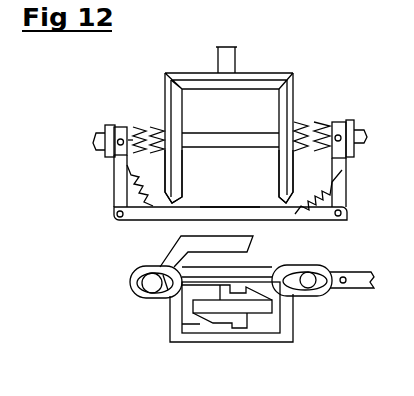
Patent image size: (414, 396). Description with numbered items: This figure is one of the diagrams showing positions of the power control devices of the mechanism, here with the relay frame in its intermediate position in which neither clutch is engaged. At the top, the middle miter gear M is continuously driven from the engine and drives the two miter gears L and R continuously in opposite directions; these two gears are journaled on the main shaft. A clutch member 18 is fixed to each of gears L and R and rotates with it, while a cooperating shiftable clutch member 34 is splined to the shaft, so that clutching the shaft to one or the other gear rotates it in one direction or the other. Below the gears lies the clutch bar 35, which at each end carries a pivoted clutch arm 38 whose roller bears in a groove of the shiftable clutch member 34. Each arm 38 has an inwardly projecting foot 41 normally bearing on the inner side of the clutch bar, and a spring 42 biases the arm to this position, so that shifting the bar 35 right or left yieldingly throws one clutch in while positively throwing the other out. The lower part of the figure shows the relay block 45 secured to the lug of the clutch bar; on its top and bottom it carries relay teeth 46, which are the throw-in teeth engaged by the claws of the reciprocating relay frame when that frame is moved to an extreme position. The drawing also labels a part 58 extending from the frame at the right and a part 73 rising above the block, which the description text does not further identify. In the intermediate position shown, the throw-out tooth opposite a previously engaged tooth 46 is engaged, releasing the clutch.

The clutch member 18 is at (162, 125).
The clutch member 34 is at (133, 128).
The clutch bar 35 is at (221, 214).
The clutch arm 38 is at (114, 189).
The foot 41 is at (137, 204).
The spring 42 is at (137, 191).
The relay block 45 is at (202, 306).
The relay tooth 46 is at (293, 320).
The lever arm 58 is at (372, 279).
The tab 73 is at (206, 251).
The miter gear M is at (245, 90).
The miter gear L is at (180, 175).
The miter gear R is at (279, 172).